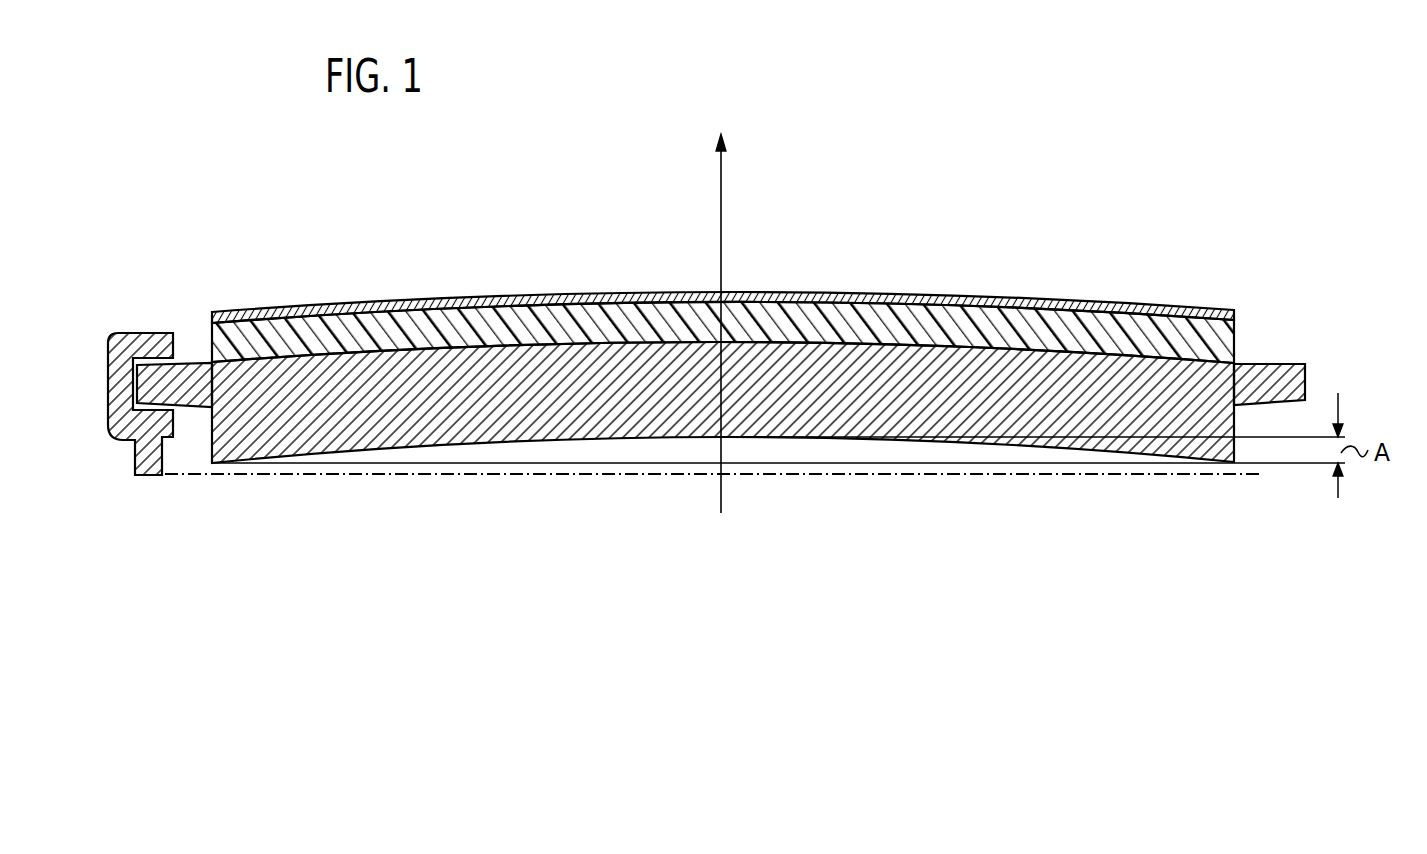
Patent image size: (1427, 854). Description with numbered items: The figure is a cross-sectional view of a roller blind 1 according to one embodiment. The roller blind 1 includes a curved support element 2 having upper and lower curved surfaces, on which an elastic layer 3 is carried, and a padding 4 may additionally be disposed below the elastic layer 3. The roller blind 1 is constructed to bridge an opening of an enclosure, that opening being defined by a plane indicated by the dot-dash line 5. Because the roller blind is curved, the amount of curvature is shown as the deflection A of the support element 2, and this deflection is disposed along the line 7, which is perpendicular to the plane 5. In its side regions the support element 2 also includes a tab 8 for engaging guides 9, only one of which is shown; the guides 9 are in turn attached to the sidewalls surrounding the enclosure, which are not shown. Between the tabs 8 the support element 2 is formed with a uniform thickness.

The roller blind 1 is at (573, 218).
The curved support element 2 is at (286, 425).
The elastic layer 3 is at (995, 297).
The padding 4 is at (1062, 320).
The dot-dash line 5 is at (458, 475).
The line 7 is at (721, 246).
The tab 8 is at (180, 373).
The guide 9 is at (122, 335).